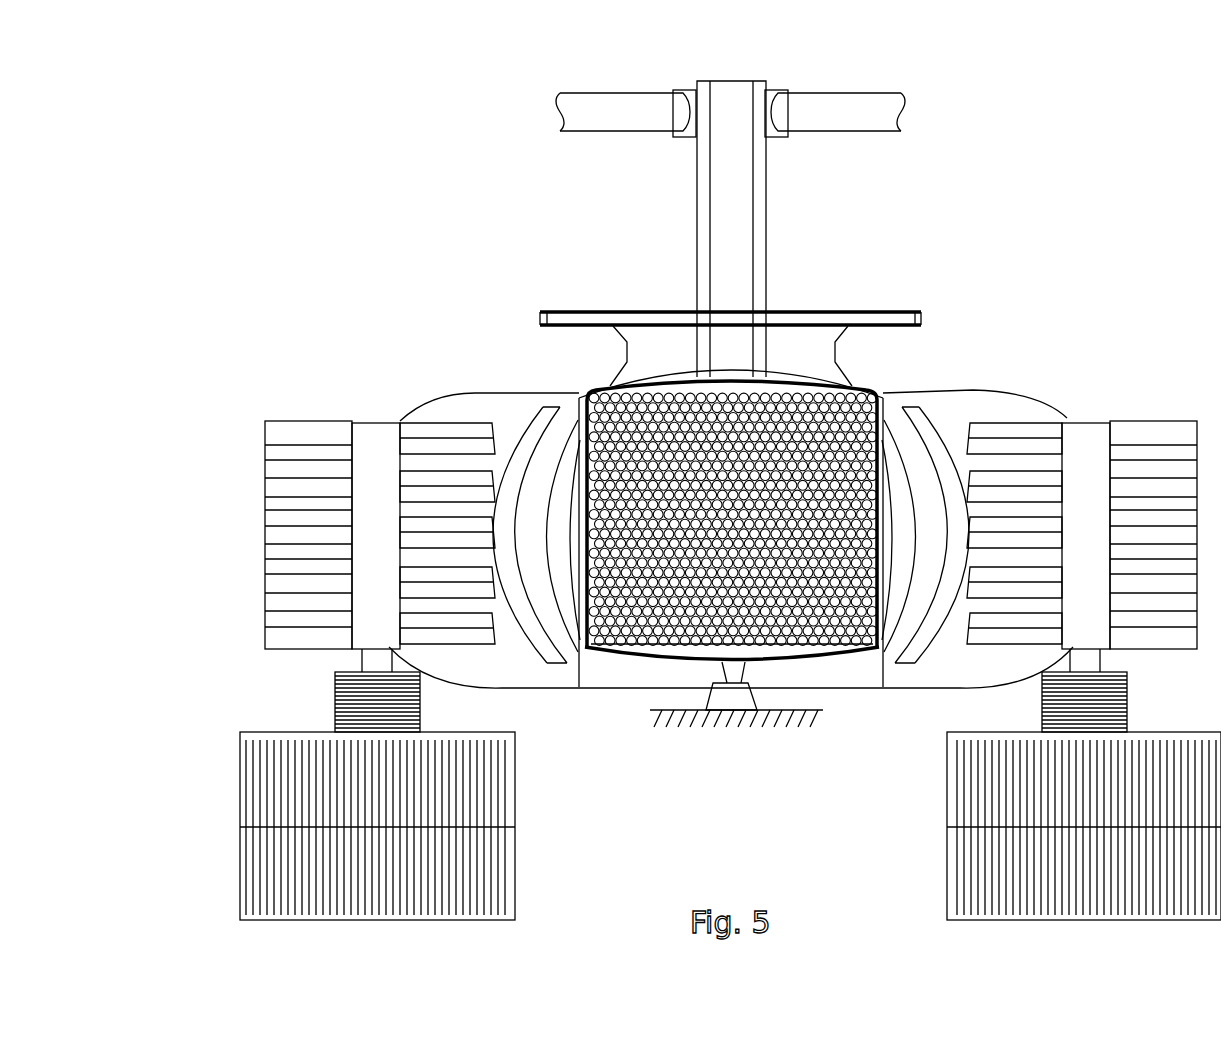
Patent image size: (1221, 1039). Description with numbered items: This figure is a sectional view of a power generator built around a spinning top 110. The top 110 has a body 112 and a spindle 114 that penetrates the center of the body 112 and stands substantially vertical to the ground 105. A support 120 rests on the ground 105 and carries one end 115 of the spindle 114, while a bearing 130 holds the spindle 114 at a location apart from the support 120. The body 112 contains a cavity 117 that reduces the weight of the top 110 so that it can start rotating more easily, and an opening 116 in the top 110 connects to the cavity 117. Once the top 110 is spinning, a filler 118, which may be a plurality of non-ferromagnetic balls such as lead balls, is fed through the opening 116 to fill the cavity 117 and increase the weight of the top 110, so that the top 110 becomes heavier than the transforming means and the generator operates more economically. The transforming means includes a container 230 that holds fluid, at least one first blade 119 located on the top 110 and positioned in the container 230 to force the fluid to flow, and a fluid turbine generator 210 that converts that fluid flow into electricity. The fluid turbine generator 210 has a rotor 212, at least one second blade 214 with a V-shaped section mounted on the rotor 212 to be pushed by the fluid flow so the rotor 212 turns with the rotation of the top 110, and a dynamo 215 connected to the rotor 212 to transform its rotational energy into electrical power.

The ground 105 is at (757, 788).
The top 110 is at (577, 312).
The body 112 is at (655, 357).
The spindle 114 is at (706, 241).
The opening 116 is at (721, 110).
The bearing 130 is at (768, 93).
The cavity 117 is at (597, 648).
The filler 118 is at (785, 398).
The first blade 119 is at (910, 425).
The container 230 is at (950, 390).
The end of the spindle 115 is at (722, 668).
The support 120 is at (747, 699).
The fluid turbine generator 210 is at (165, 450).
The rotor 212 is at (367, 529).
The second blade 214 is at (278, 453).
The dynamo 215 is at (245, 753).